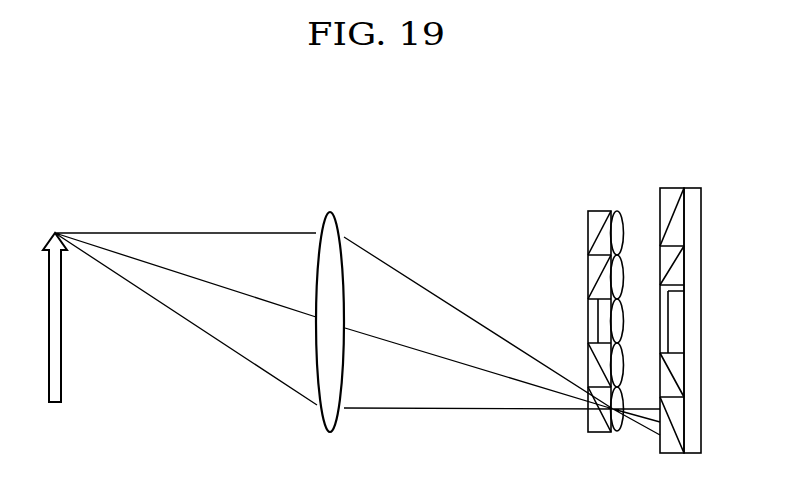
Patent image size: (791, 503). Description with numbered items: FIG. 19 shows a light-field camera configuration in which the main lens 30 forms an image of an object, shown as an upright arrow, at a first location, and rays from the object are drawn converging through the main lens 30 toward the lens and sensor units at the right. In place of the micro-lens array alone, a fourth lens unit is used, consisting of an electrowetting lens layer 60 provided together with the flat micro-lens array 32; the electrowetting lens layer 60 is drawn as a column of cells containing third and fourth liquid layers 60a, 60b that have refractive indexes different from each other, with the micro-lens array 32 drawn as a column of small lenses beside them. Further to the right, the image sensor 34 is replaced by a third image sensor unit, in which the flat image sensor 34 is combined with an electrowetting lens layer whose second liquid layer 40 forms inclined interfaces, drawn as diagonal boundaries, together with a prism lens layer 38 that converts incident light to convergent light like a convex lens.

The main lens 30 is at (330, 212).
The micro-lens array 32 is at (613, 212).
The image sensor 34 is at (691, 190).
The prism lens layer 38 is at (678, 232).
The second liquid layer 40 is at (663, 190).
The electrowetting lens layer 60 is at (563, 296).
The third liquid layer 60a is at (602, 246).
The fourth liquid layer 60b is at (576, 233).